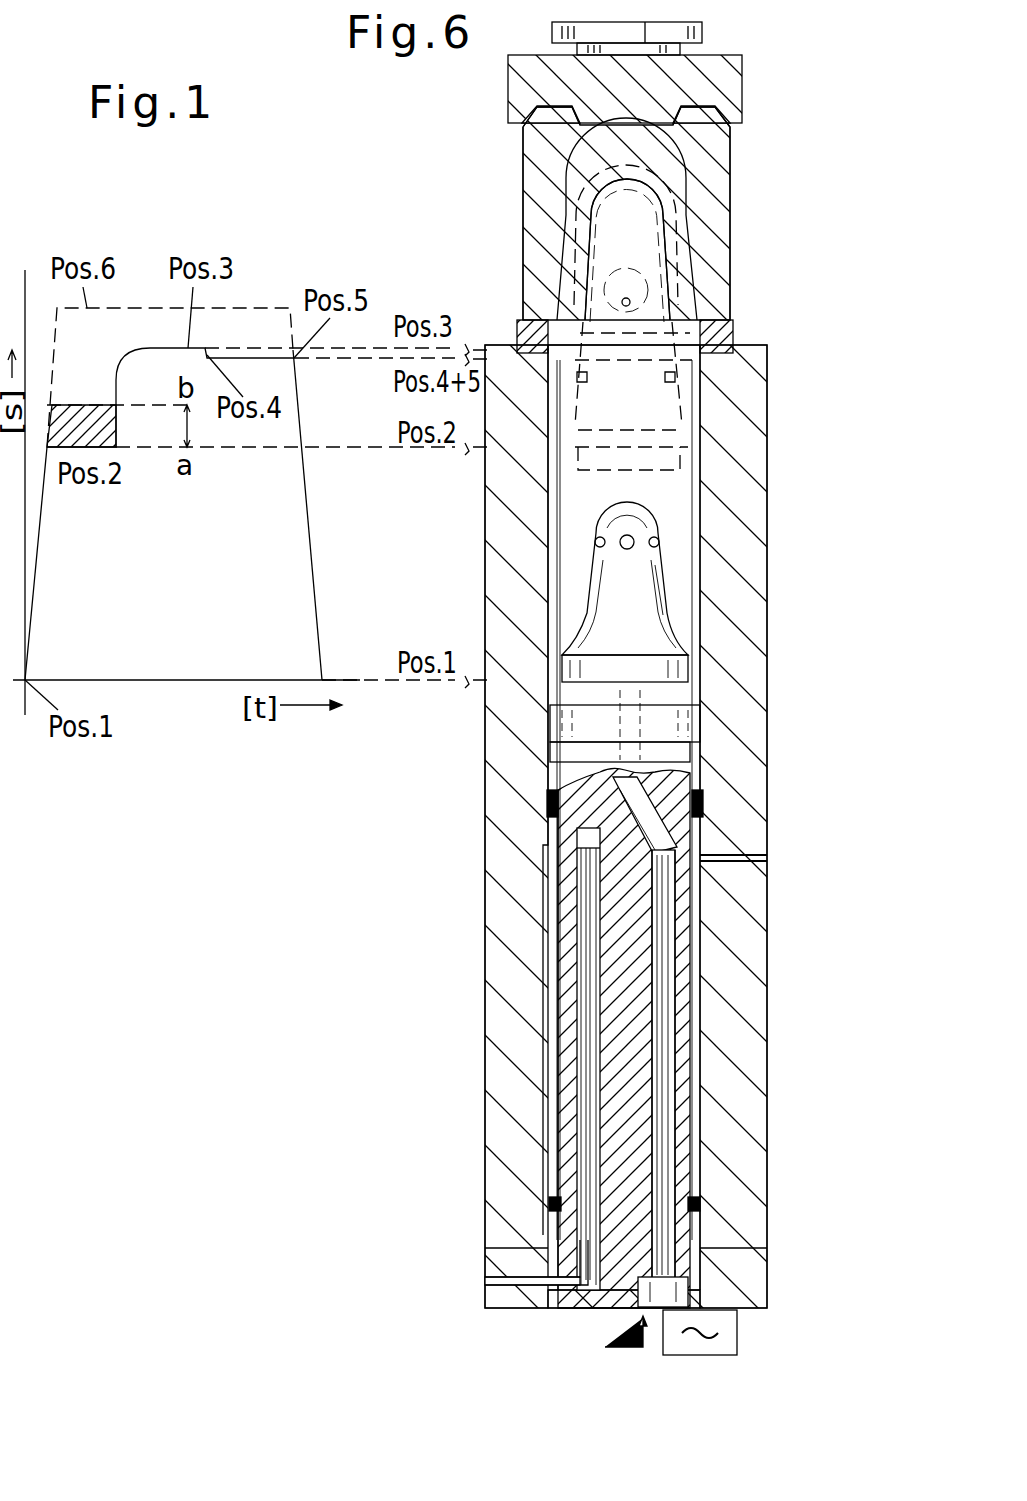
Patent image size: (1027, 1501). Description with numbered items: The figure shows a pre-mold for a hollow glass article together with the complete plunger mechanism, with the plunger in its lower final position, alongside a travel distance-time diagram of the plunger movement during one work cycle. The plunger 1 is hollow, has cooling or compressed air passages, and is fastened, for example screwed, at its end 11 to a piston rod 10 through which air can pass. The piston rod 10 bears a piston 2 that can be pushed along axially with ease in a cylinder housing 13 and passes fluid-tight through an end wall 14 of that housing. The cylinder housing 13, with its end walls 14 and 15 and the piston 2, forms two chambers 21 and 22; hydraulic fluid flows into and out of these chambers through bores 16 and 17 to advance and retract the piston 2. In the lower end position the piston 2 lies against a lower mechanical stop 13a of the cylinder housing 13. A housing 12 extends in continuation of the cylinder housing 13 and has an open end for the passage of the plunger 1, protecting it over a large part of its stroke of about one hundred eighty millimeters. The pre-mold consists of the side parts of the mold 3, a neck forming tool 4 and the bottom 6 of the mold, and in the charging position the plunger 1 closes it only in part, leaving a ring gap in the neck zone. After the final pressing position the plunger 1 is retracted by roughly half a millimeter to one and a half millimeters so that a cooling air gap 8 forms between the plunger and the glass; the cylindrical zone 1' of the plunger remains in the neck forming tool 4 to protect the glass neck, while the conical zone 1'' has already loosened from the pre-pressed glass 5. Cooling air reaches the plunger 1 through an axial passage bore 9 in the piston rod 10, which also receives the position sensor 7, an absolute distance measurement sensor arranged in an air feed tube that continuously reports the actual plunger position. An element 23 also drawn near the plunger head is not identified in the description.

The plunger 1 is at (562, 578).
The cylindrical zone 1' is at (677, 712).
The conical zone 1'' is at (732, 591).
The piston 2 is at (550, 1192).
The side parts of the mold 3 is at (548, 292).
The neck forming tool 4 is at (718, 340).
The pre-pressed glass 5 is at (612, 155).
The bottom of the mold 6 is at (555, 75).
The position sensor 7 is at (660, 1228).
The cooling air gap 8 is at (590, 232).
The axial passage bore 9 is at (672, 855).
The piston rod 10 is at (615, 998).
The end 11 is at (565, 672).
The housing 12 is at (510, 530).
The cylinder housing 13 is at (520, 1050).
The lower mechanical stop 13a is at (510, 1262).
The end wall 14 is at (548, 858).
The end wall 15 is at (548, 798).
The bore 16 is at (742, 858).
The bore 17 is at (505, 1285).
The chamber 21 is at (555, 900).
The chamber 22 is at (578, 830).
The holes 23 is at (658, 545).